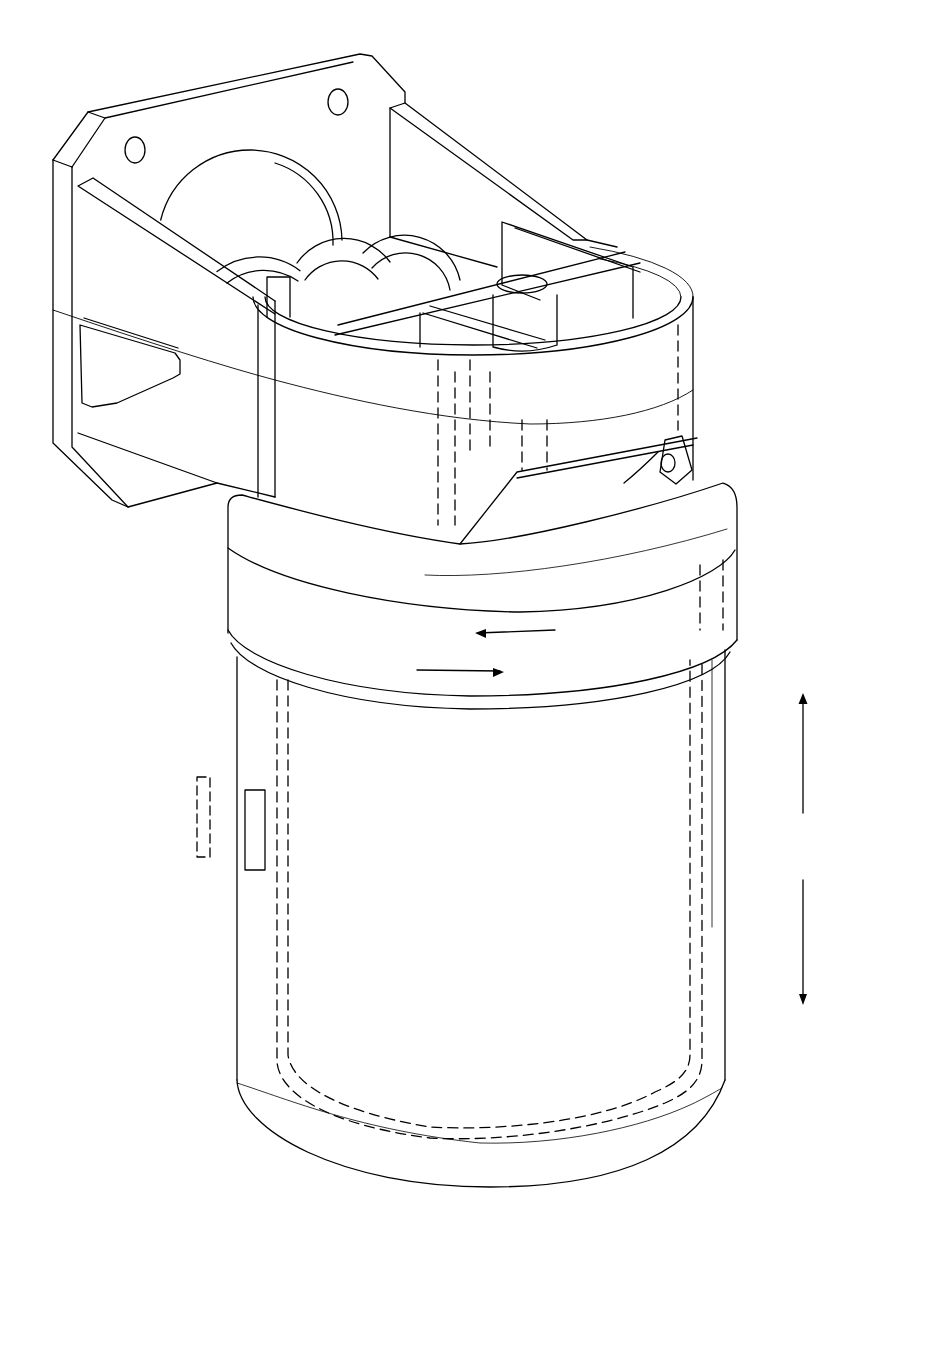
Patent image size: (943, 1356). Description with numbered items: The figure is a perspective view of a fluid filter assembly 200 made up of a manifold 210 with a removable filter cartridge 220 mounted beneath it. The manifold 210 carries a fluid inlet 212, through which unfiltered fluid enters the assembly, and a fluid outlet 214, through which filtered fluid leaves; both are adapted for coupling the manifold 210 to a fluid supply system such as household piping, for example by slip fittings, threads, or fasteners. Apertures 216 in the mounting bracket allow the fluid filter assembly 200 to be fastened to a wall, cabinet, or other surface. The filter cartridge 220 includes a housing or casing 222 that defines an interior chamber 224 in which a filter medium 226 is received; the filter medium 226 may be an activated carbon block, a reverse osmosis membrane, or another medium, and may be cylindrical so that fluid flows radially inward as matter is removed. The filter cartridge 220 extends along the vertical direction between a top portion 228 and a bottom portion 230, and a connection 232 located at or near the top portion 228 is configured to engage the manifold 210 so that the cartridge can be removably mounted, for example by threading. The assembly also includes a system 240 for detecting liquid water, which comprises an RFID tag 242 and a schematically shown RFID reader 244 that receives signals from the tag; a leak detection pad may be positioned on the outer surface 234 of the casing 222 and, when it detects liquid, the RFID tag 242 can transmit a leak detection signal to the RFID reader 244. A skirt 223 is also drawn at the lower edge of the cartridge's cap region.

The fluid filter assembly 200 is at (548, 117).
The manifold 210 is at (690, 354).
The fluid inlet 212 is at (305, 265).
The fluid outlet 214 is at (222, 267).
The apertures 216 is at (140, 150).
The filter cartridge 220 is at (240, 610).
The casing 222 is at (237, 997).
The skirt 223 is at (730, 670).
The chamber 224 is at (693, 1082).
The filter medium 226 is at (287, 933).
The top portion 228 is at (712, 460).
The bottom portion 230 is at (683, 1140).
The connection 232 is at (628, 485).
The outer surface 234 is at (237, 1037).
The system for detecting liquid water 240 is at (133, 800).
The RFID tag 242 is at (245, 857).
The RFID reader 244 is at (190, 790).